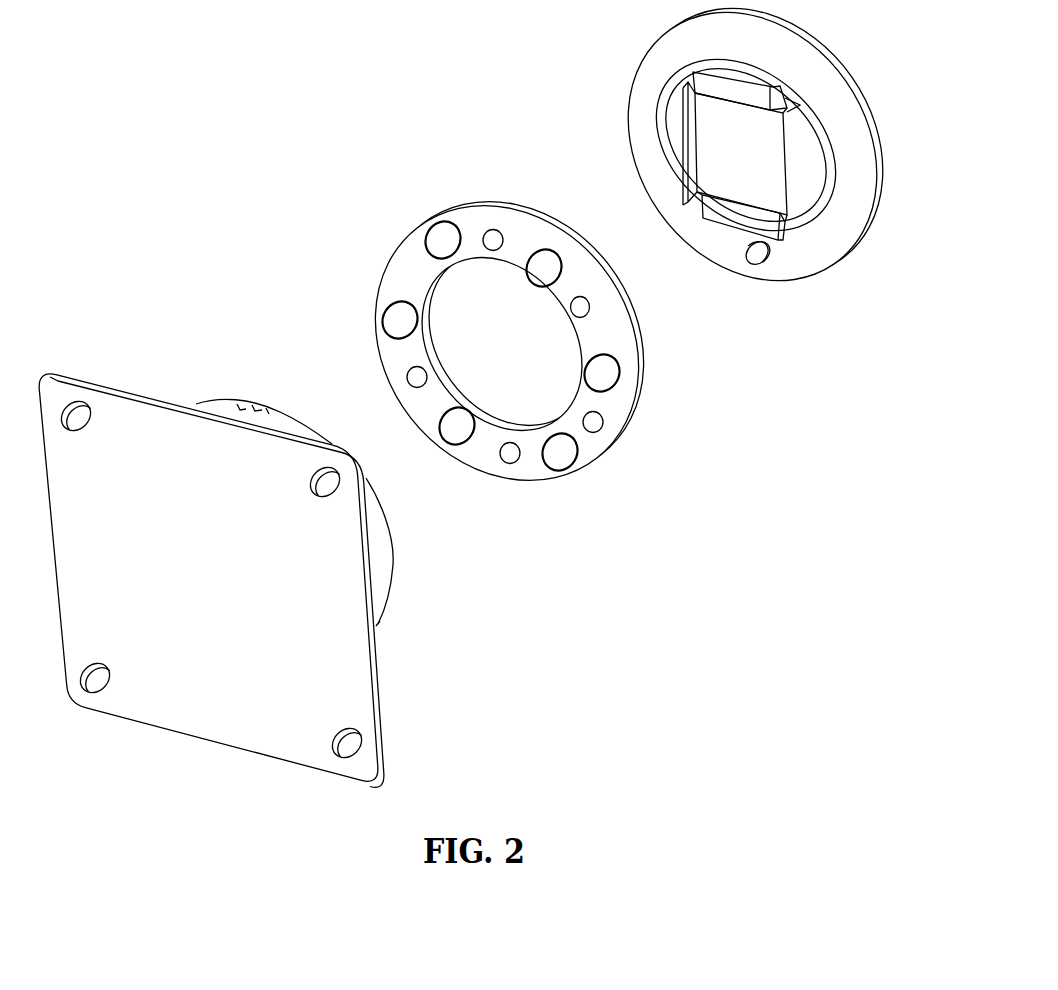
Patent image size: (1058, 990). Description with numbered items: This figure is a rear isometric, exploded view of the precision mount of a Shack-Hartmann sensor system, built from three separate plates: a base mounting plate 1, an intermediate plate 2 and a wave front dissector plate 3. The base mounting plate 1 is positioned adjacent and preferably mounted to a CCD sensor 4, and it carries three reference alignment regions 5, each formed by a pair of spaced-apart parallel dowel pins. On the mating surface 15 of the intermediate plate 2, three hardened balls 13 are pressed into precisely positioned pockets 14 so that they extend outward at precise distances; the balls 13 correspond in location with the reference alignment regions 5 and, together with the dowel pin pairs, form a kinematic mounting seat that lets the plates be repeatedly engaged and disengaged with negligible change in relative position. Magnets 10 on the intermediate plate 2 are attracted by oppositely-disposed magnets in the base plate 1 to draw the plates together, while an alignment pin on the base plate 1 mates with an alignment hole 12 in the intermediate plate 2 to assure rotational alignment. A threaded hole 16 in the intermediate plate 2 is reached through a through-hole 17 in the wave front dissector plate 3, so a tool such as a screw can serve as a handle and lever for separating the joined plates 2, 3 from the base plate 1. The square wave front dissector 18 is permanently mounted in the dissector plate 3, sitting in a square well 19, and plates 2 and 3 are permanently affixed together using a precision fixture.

The base mounting plate 1 is at (383, 577).
The intermediate plate 2 is at (470, 205).
The wave front dissector plate 3 is at (660, 63).
The CCD sensor 4 is at (340, 685).
The reference alignment regions 5 is at (199, 361).
The magnets 10 is at (398, 320).
The alignment hole 12 is at (583, 307).
The hardened balls 13 is at (417, 377).
The pockets 14 is at (596, 422).
The mating surface 15 is at (398, 278).
The threaded hole 16 is at (512, 457).
The through-hole 17 is at (765, 262).
The wave front dissector 18 is at (712, 181).
The square well 19 is at (788, 217).